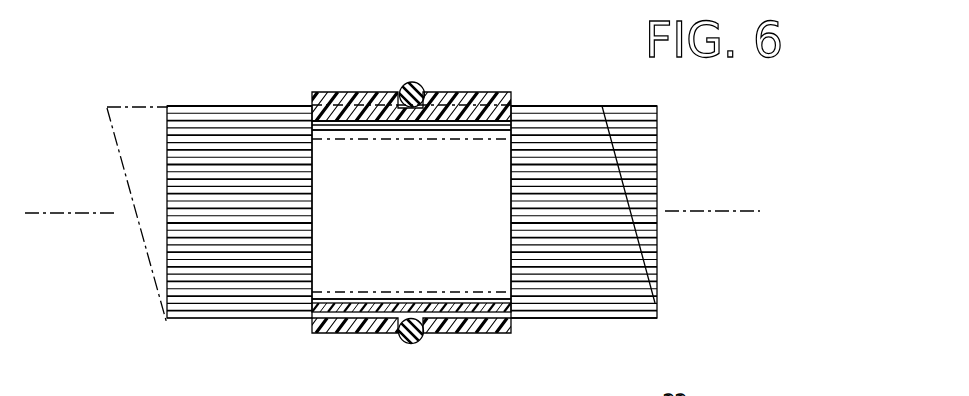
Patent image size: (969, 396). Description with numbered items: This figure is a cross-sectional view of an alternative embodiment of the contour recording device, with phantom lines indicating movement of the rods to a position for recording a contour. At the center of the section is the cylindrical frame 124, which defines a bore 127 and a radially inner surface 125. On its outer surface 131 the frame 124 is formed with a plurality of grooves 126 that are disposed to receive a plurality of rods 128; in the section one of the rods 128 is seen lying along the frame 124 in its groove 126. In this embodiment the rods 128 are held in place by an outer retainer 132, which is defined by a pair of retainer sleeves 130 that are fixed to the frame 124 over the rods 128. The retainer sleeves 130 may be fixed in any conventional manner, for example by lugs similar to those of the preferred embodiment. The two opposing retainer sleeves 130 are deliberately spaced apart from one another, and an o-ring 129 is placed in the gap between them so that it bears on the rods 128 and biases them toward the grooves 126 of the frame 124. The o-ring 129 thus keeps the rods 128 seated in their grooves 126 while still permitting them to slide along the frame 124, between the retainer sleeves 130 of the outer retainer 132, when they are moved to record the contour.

The cylindrical frame 124 is at (468, 285).
The radially inner surface 125 is at (416, 200).
The grooves 126 is at (312, 118).
The bore 127 is at (498, 160).
The rods 128 is at (582, 326).
The o-ring 129 is at (408, 343).
The retainer sleeves 130 is at (430, 75).
The outer surface 131 is at (338, 312).
The outer retainer 132 is at (448, 105).